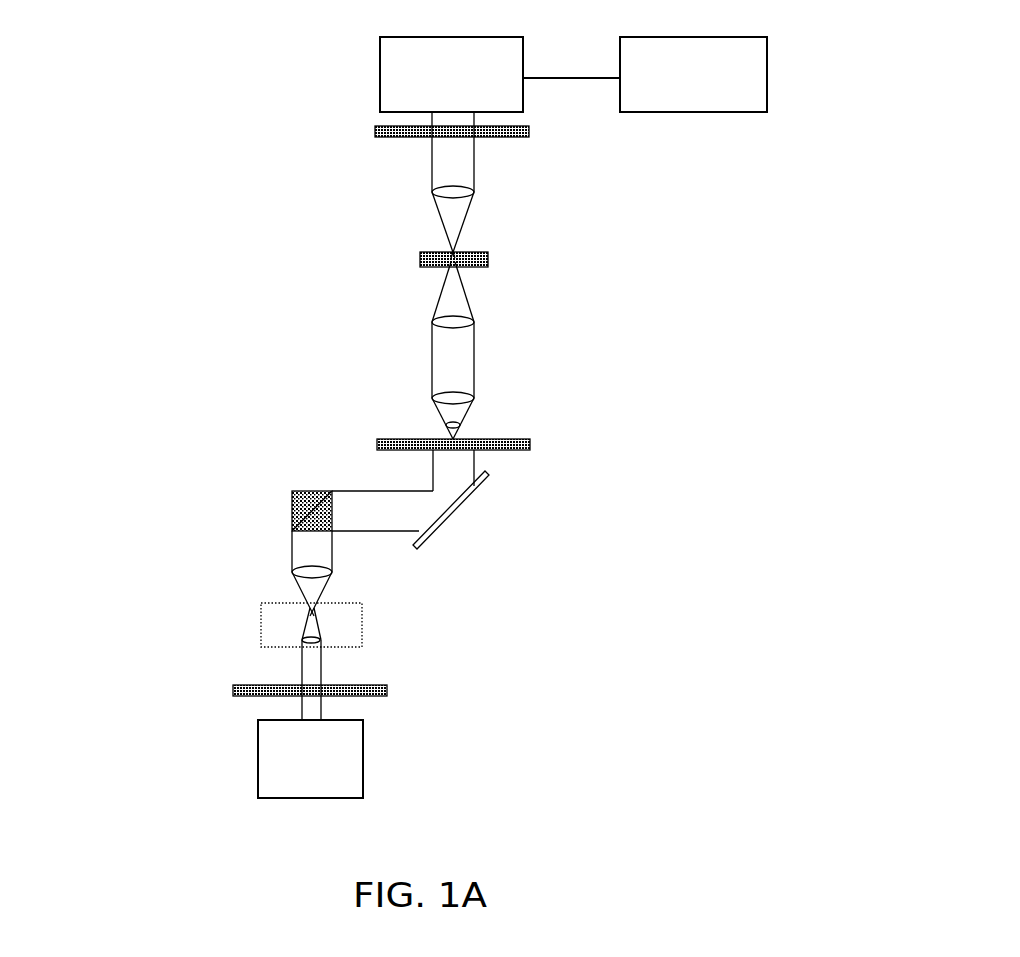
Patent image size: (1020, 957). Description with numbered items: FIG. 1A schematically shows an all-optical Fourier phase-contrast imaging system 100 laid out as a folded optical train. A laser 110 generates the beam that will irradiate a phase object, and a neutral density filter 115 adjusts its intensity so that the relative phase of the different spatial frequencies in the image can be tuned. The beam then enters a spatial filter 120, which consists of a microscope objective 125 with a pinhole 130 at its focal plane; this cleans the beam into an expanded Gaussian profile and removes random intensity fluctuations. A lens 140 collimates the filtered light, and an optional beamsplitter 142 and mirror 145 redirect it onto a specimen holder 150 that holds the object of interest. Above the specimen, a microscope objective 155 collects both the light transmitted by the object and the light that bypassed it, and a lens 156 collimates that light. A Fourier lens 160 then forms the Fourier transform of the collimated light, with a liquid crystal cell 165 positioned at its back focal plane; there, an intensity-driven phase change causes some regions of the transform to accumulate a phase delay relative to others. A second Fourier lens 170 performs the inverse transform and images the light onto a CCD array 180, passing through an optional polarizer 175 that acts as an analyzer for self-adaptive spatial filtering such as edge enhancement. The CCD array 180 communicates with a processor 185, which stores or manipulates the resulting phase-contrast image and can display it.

The Fourier phase-contrast imaging system 100 is at (72, 91).
The laser 110 is at (291, 781).
The neutral density filter 115 is at (388, 690).
The spatial filter 120 is at (275, 631).
The microscope objective 125 is at (321, 642).
The pinhole 130 is at (275, 612).
The lens 140 is at (292, 572).
The beamsplitter 142 is at (292, 517).
The mirror 145 is at (447, 516).
The specimen holder 150 is at (531, 445).
The microscope objective 155 is at (447, 425).
The lens 156 is at (432, 398).
The Fourier lens 160 is at (432, 322).
The liquid crystal cell 165 is at (420, 259).
The Fourier lens 170 is at (432, 192).
The polarizer 175 is at (375, 131).
The CCD array 180 is at (431, 98).
The processor 185 is at (672, 98).